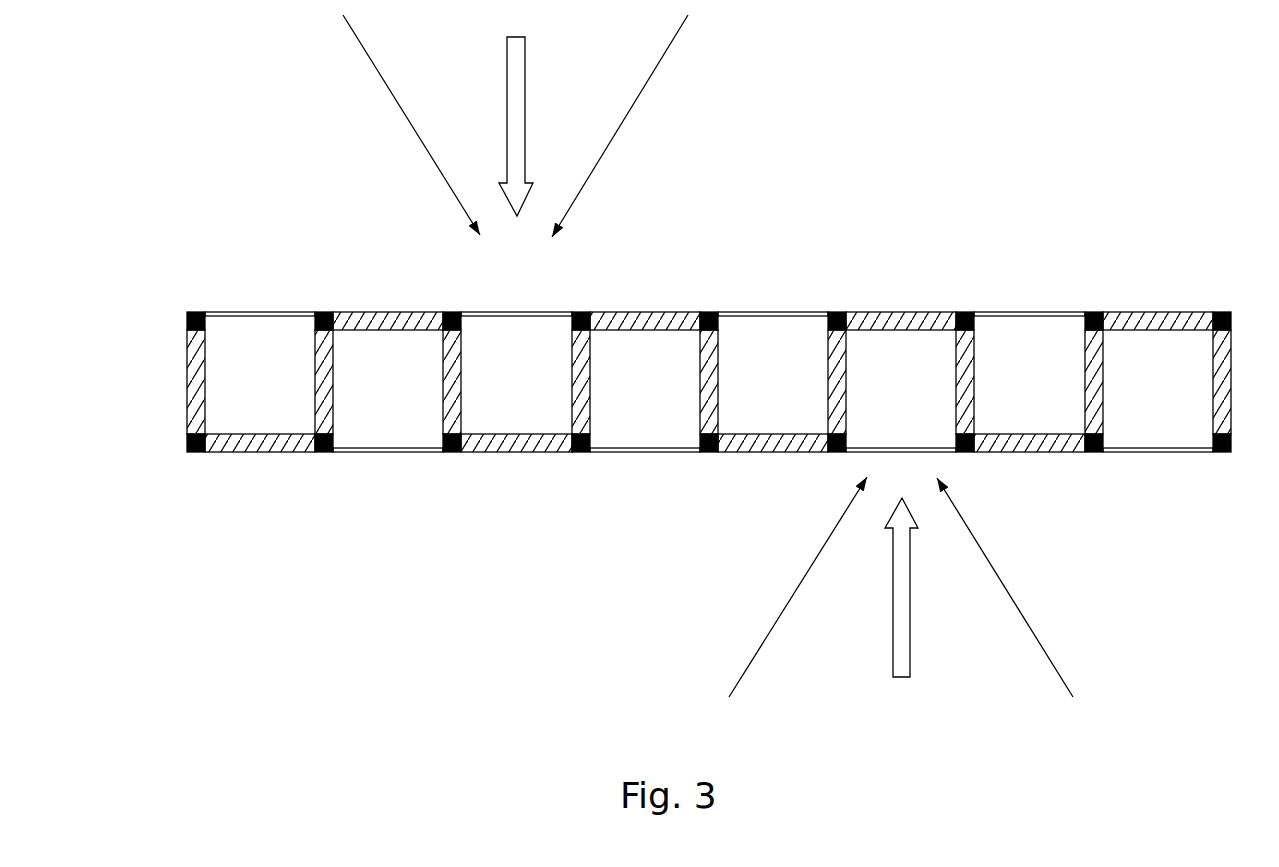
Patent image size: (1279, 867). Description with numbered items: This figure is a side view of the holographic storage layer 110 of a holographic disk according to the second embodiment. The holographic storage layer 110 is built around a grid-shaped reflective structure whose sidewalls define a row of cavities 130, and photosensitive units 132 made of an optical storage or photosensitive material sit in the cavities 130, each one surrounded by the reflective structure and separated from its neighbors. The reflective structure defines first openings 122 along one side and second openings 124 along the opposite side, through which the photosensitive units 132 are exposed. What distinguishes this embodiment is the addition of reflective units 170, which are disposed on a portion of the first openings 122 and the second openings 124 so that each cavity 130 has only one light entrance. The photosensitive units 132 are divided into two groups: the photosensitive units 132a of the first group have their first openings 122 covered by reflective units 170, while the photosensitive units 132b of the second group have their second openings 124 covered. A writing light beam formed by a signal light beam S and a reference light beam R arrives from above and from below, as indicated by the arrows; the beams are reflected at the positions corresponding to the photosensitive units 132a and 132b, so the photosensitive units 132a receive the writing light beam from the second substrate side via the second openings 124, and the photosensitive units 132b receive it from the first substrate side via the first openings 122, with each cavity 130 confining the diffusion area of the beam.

The holographic storage layer 110 is at (138, 99).
The first openings 122 is at (780, 291).
The second openings 124 is at (622, 458).
The cavities 130 is at (225, 338).
The photosensitive units 132 is at (263, 326).
The photosensitive units of first group 132a is at (658, 348).
The photosensitive units of second group 132b is at (785, 328).
The reflective units 170 is at (1175, 313).
The reference light beam R is at (369, 57).
The signal light beam S is at (525, 57).